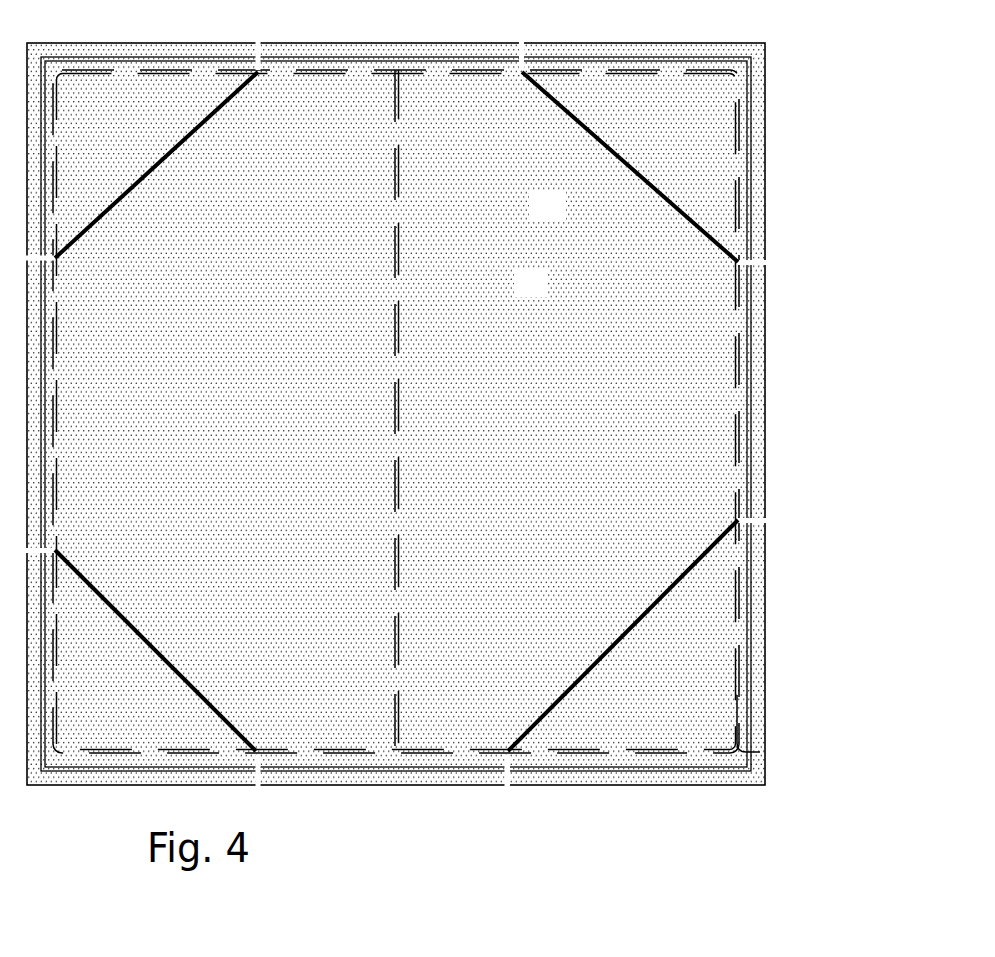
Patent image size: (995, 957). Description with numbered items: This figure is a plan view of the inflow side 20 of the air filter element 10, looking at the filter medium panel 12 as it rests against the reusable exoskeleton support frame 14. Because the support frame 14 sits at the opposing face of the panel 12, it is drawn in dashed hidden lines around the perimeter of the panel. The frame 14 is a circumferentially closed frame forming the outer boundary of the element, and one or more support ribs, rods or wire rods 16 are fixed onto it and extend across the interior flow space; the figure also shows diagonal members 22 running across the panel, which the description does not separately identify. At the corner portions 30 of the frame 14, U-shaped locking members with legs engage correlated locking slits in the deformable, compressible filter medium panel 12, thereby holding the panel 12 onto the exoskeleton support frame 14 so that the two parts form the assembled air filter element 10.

The air filter element 10 is at (843, 242).
The filter medium panel 12 is at (578, 415).
The exoskeleton support frame 14 is at (612, 77).
The support rib 16 is at (400, 643).
The inflow side 20 is at (545, 294).
The diagonal brace 22 is at (620, 163).
The corner portion 30 is at (760, 752).